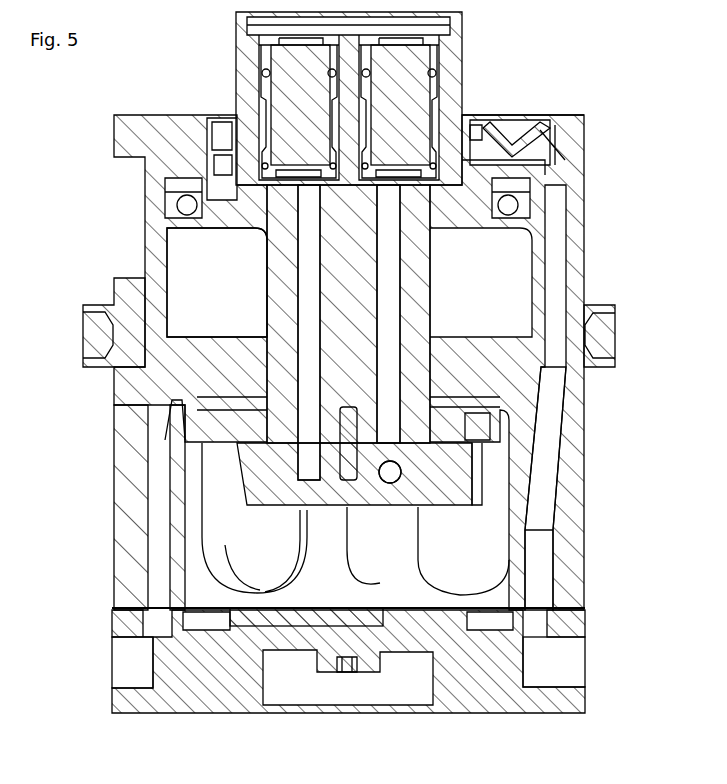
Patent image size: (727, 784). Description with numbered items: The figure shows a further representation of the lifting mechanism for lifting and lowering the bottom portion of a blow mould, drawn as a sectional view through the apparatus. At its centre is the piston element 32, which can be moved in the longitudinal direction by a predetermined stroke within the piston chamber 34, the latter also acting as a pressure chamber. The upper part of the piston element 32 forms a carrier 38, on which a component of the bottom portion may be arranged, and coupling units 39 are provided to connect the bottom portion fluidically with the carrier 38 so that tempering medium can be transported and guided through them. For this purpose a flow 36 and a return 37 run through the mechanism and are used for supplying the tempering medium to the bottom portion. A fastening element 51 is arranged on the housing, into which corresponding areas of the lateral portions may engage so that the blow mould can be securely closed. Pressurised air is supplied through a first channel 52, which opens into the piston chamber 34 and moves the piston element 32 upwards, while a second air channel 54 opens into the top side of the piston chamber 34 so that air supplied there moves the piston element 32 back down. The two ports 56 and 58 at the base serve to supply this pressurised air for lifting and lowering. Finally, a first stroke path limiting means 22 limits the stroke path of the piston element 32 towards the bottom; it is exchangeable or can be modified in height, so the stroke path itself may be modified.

The first stroke path limiting means 22 is at (262, 607).
The piston element 32 is at (415, 338).
The piston chamber 34 is at (230, 290).
The flow 36 is at (385, 233).
The return 37 is at (308, 263).
The carrier 38 is at (450, 113).
The coupling units 39 is at (405, 72).
The fastening element 51 is at (131, 346).
The first channel 52 is at (157, 483).
The second air channel 54 is at (545, 482).
The port 56 is at (127, 672).
The port 58 is at (570, 655).